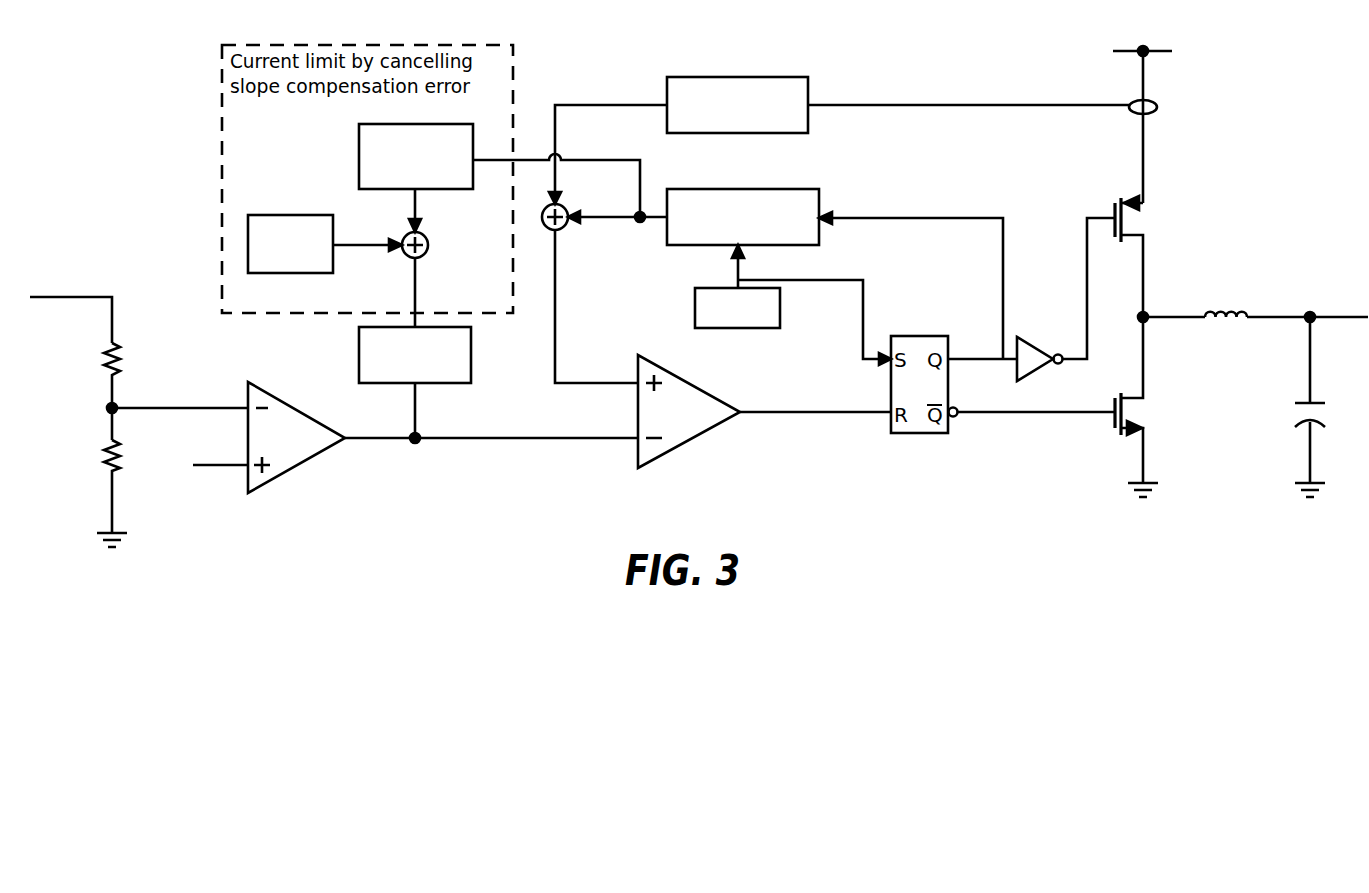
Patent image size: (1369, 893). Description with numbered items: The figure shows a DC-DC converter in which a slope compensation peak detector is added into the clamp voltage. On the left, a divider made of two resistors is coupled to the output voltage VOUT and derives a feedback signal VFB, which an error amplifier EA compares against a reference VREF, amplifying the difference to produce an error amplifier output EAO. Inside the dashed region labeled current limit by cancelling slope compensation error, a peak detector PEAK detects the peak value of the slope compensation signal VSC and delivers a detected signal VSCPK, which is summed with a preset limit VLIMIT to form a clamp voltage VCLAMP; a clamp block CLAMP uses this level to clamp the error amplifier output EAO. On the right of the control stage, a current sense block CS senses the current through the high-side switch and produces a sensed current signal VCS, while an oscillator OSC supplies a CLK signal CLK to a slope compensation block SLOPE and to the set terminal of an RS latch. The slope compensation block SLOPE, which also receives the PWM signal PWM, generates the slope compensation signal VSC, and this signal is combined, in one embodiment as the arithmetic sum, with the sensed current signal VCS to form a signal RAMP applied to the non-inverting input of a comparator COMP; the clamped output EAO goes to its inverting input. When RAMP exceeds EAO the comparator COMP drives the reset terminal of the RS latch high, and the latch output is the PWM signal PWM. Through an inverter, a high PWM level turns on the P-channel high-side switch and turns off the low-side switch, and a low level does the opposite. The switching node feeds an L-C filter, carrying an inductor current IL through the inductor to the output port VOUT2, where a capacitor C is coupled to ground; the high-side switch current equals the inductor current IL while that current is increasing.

The output port VOUT is at (78, 407).
The feedback signal VFB is at (180, 397).
The reference VREF is at (204, 454).
The error amplifier EA is at (296, 437).
The error amplifier output EAO is at (491, 448).
The peak detector PEAK is at (416, 156).
The preset limit VLIMIT is at (325, 244).
The detected signal VSCPK is at (441, 223).
The clamp voltage VCLAMP is at (452, 292).
The clamp block CLAMP is at (415, 382).
The sensed current signal VCS is at (608, 141).
The RAMP signal RAMP is at (596, 306).
The slope compensation signal VSC is at (617, 208).
The current sense block CS is at (912, 105).
The slope compensation block SLOPE is at (743, 217).
The oscillator OSC is at (737, 308).
The CLK signal CLK is at (811, 305).
The comparator COMP is at (764, 411).
The PWM signal PWM is at (918, 285).
The inductor current IL is at (1241, 289).
The output port VOUT2 is at (1336, 306).
The capacitor C is at (1299, 407).